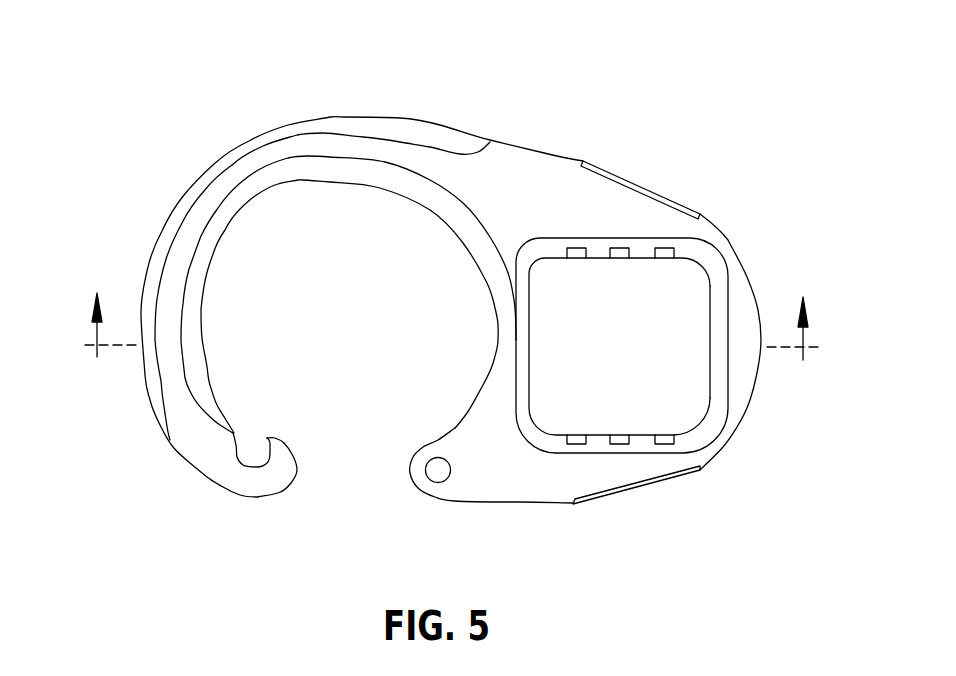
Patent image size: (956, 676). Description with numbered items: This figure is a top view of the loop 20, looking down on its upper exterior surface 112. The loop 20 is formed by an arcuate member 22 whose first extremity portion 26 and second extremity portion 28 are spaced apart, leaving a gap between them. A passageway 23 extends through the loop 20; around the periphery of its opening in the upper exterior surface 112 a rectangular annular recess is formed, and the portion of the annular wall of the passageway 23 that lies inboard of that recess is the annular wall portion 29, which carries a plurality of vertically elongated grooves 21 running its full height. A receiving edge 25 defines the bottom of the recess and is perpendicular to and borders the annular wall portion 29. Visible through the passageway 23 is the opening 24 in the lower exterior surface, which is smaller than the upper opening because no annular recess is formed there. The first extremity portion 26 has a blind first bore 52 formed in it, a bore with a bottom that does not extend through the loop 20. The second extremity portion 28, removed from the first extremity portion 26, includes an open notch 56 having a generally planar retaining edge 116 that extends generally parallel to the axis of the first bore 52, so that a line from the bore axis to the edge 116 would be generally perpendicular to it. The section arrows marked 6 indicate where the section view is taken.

The loop 20 is at (750, 198).
The vertically elongated grooves 21 is at (663, 248).
The arcuate member 22 is at (202, 173).
The passageway 23 is at (540, 253).
The opening 24 is at (685, 407).
The receiving edge 25 is at (712, 320).
The first extremity portion 26 is at (437, 499).
The second extremity portion 28 is at (252, 498).
The annular wall portion 29 is at (527, 318).
The first bore 52 is at (455, 452).
The open notch 56 is at (247, 466).
The upper exterior surface 112 is at (466, 177).
The retaining edge 116 is at (262, 445).
The section line 6- 6 is at (452, 346).